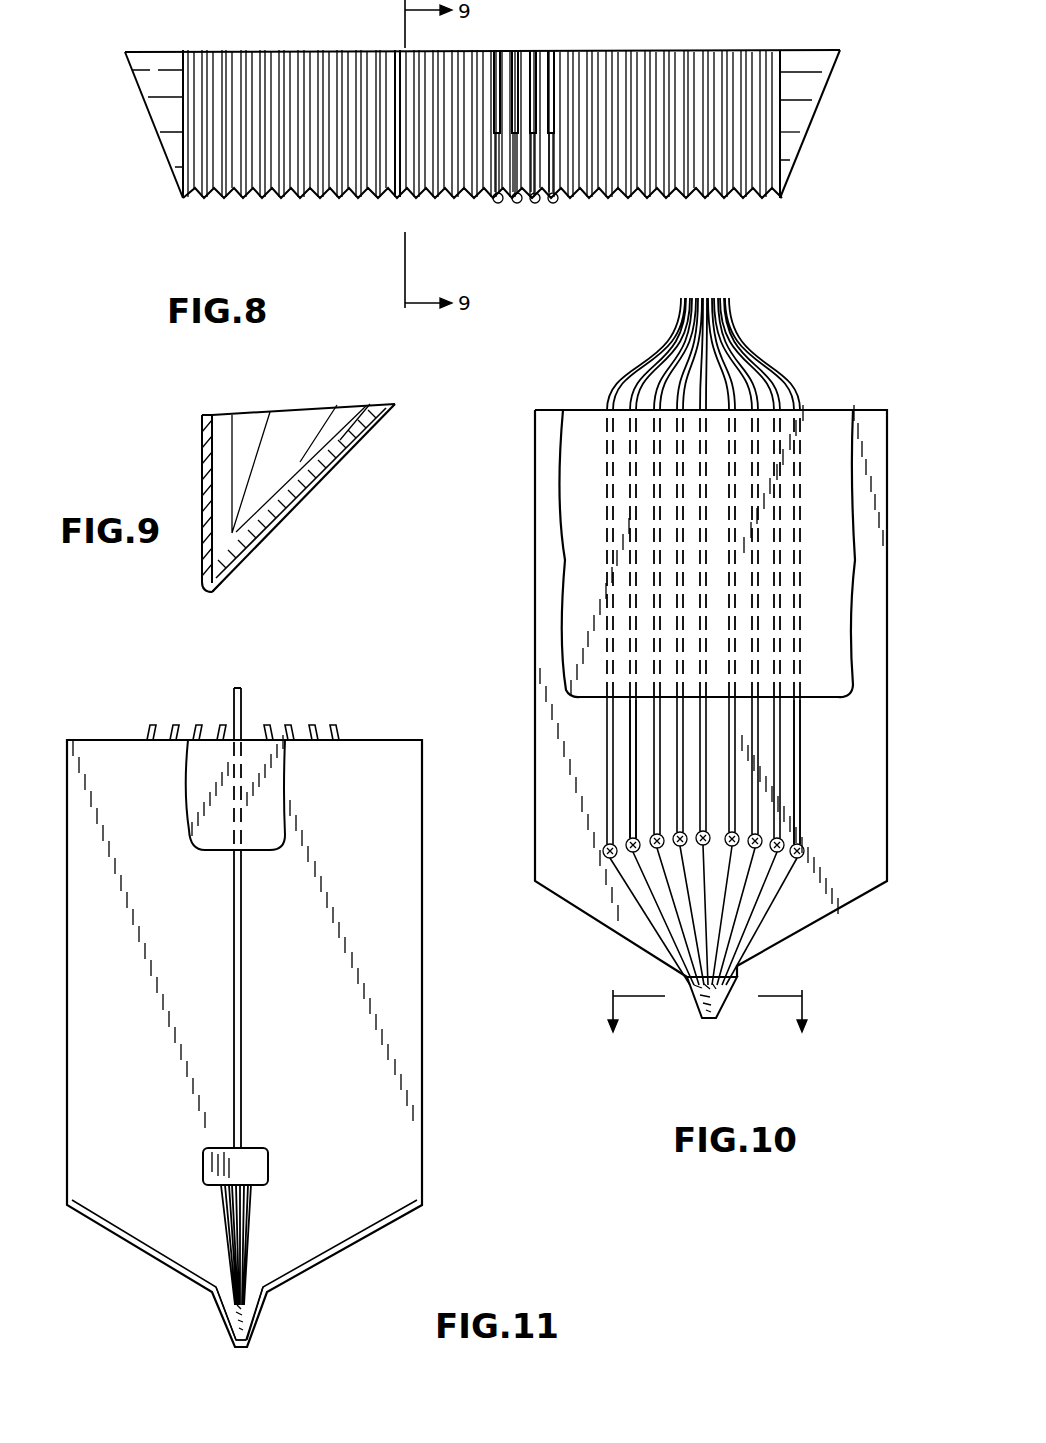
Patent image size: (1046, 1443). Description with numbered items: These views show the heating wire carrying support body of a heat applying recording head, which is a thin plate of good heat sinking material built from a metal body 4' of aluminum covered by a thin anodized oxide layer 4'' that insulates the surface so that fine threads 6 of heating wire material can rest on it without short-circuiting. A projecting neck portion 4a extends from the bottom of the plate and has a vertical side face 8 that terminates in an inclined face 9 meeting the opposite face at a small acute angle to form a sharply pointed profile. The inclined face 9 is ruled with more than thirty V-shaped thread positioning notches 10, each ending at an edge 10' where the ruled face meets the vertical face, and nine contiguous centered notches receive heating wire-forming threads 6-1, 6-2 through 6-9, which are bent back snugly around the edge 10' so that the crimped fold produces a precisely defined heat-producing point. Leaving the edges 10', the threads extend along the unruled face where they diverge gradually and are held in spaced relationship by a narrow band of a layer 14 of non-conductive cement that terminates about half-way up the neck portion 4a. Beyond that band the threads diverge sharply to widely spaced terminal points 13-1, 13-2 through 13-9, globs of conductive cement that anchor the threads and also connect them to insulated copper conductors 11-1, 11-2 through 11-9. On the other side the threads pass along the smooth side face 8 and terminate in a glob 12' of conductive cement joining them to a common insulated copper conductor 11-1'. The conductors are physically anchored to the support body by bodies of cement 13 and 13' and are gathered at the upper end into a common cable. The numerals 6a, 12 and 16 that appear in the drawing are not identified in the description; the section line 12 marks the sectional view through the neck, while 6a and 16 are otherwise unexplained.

In FIG. 9, the body of metal 4' is at (304, 473).
In FIG. 9, the anodized oxide layer 4'' is at (297, 490).
In FIG. 8, the projecting neck portion 4a is at (790, 122).
In FIG. 11, the projecting neck portion 4a is at (253, 1312).
In FIG. 8, the heating wire-forming threads 6 is at (532, 62).
In FIG. 9, the heating wire-forming threads 6 is at (250, 571).
In FIG. 11, the heating wire-forming threads 6 is at (223, 1235).
In FIG. 8, the heating wire-forming thread 6-1 is at (553, 205).
In FIG. 10, the heating wire-forming thread 6-1 is at (640, 895).
In FIG. 8, the heating wire-forming thread 6-2 is at (535, 206).
In FIG. 10, the heating wire-forming thread 6-2 is at (660, 900).
In FIG. 8, the heating wire-forming thread 6-9 is at (400, 204).
In FIG. 10, the heating wire-forming thread 6-9 is at (765, 912).
In FIG. 9, the wire end 6a is at (205, 592).
In FIG. 10, the vertical side face 8 is at (575, 887).
In FIG. 11, the vertical side face 8 is at (407, 1183).
In FIG. 8, the inclined face 9 is at (150, 113).
In FIG. 9, the inclined face 9 is at (345, 466).
In FIG. 11, the inclined face 9 is at (238, 1347).
In FIG. 8, the thread positioning notches 10 is at (482, 220).
In FIG. 9, the thread positioning notches 10 is at (276, 500).
In FIG. 11, the thread positioning notches 10 is at (272, 1368).
In FIG. 9, the edge 10' is at (237, 612).
In FIG. 10, the edge 10' is at (694, 1058).
In FIG. 10, the insulated copper conductor 11-1 is at (626, 571).
In FIG. 10, the insulated copper conductor 11-2 is at (633, 730).
In FIG. 10, the insulated copper conductor 11-9 is at (800, 745).
In FIG. 11, the common insulated copper conductor 11-1' is at (286, 900).
In FIG. 10, the section line 12 is at (708, 1025).
In FIG. 11, the glob of conductive cement 12' is at (269, 1145).
In FIG. 10, the body of cement 13 is at (714, 515).
In FIG. 11, the body of cement 13' is at (257, 792).
In FIG. 10, the terminal point 13-1 is at (608, 852).
In FIG. 10, the terminal point 13-2 is at (637, 842).
In FIG. 10, the terminal point 13-9 is at (802, 848).
In FIG. 10, the layer of non-conductive cement 14 is at (690, 985).
In FIG. 11, the layer of non-conductive cement 14 is at (257, 1335).
In FIG. 8, the end flap 16 is at (806, 66).